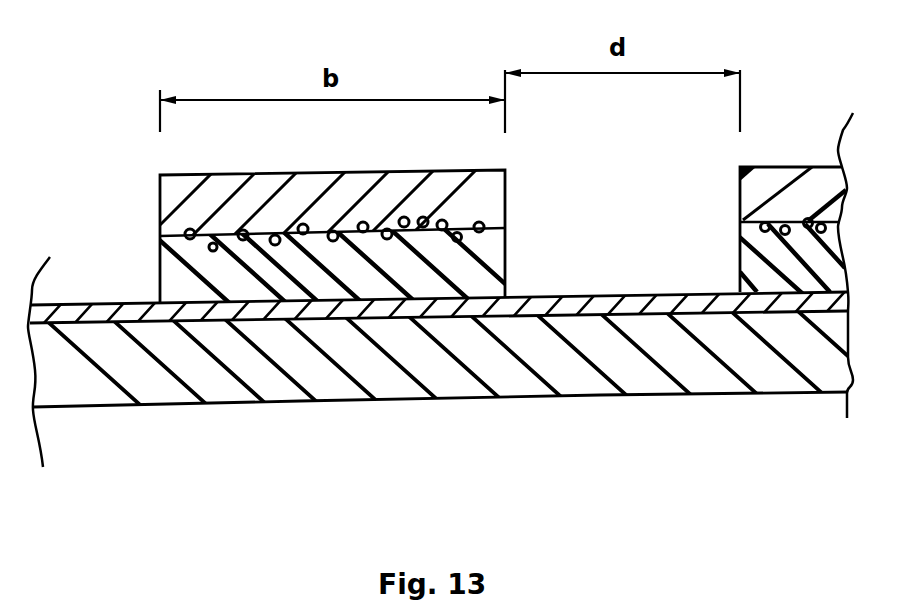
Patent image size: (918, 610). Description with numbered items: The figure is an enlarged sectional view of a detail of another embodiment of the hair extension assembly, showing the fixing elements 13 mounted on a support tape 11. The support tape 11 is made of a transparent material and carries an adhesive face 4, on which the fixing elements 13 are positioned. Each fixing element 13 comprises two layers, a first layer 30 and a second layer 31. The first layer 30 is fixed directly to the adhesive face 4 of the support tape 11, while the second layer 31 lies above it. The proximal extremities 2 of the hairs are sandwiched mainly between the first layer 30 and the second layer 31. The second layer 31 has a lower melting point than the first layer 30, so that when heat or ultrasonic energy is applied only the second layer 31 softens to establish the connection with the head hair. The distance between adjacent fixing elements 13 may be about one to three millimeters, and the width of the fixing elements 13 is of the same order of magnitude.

The proximal extremities 2 is at (336, 234).
The adhesive face 4 is at (590, 297).
The support tape 11 is at (518, 382).
The fixing elements 13 is at (441, 207).
The first layer 30 is at (207, 272).
The second layer 31 is at (197, 210).